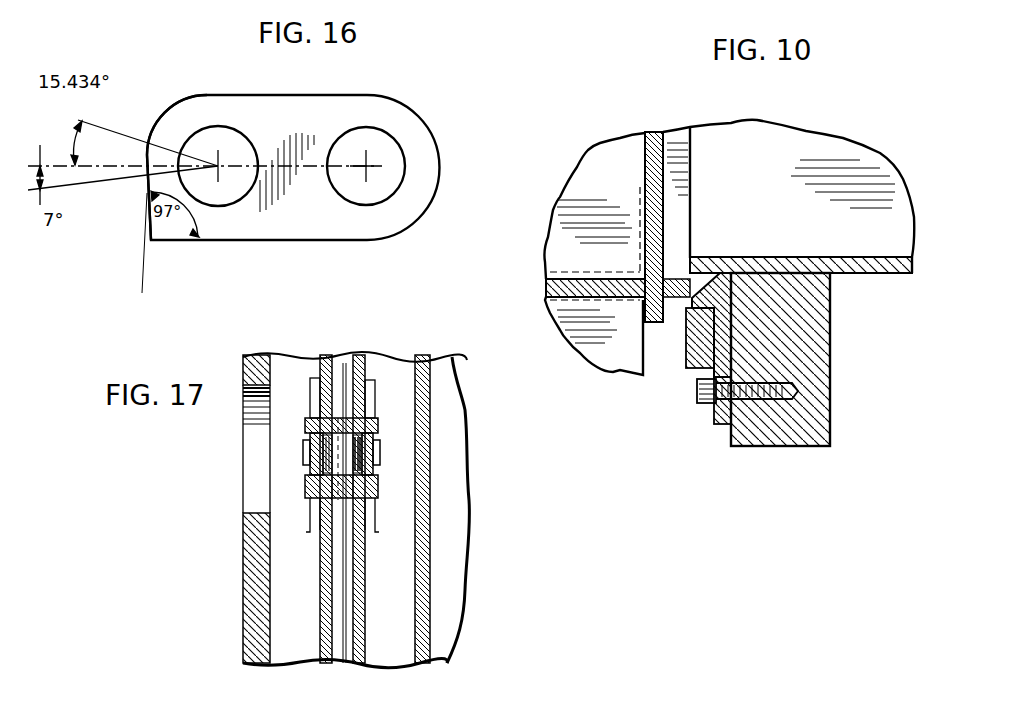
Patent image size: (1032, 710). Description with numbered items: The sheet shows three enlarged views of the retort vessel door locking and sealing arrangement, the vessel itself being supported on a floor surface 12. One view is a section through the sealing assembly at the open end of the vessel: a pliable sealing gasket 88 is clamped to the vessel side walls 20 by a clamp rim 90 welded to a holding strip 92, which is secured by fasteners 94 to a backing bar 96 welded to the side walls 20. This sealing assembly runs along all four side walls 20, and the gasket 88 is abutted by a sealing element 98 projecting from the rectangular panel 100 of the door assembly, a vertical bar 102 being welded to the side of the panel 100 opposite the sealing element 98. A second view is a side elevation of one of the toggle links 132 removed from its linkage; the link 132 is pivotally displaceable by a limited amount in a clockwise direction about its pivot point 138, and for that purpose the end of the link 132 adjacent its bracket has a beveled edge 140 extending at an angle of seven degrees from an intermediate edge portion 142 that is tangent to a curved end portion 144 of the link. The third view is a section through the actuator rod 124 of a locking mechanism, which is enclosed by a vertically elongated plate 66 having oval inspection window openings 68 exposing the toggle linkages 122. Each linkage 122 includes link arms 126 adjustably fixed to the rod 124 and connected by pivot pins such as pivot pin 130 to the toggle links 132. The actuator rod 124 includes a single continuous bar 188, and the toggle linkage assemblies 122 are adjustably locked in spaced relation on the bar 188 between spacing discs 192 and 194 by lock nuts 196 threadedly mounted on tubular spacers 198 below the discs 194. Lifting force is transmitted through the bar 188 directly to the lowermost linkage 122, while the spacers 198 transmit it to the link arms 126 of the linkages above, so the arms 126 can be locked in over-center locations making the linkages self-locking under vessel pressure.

In FIG. 10, the floor surface 12 is at (851, 141).
In FIG. 17, the side walls 20 is at (428, 508).
In FIG. 10, the side walls 20 is at (882, 263).
In FIG. 17, the vertically elongated plate 66 is at (253, 577).
In FIG. 17, the inspection window openings 68 is at (253, 498).
In FIG. 10, the sealing gasket 88 is at (718, 293).
In FIG. 10, the clamp rim 90 is at (688, 356).
In FIG. 10, the holding strip 92 is at (714, 407).
In FIG. 10, the fasteners 94 is at (722, 426).
In FIG. 10, the backing bar 96 is at (789, 433).
In FIG. 10, the sealing element 98 is at (673, 278).
In FIG. 10, the rectangular panel 100 is at (650, 160).
In FIG. 10, the vertical bar 102 is at (578, 277).
In FIG. 17, the toggle linkages 122 is at (383, 407).
In FIG. 17, the actuator rod 124 is at (321, 612).
In FIG. 17, the link arms 126 is at (367, 470).
In FIG. 17, the pivot pin 130 is at (303, 452).
In FIG. 16, the toggle links 132 is at (338, 103).
In FIG. 16, the pivot point 138 is at (229, 200).
In FIG. 16, the beveled edge 140 is at (146, 230).
In FIG. 16, the intermediate edge portion 142 is at (148, 150).
In FIG. 16, the curved end portion 144 is at (172, 110).
In FIG. 17, the bar 188 is at (344, 620).
In FIG. 17, the spacing disc 192 is at (380, 430).
In FIG. 17, the spacing disc 194 is at (380, 485).
In FIG. 17, the lock nuts 196 is at (377, 497).
In FIG. 17, the tubular spacers 198 is at (367, 592).